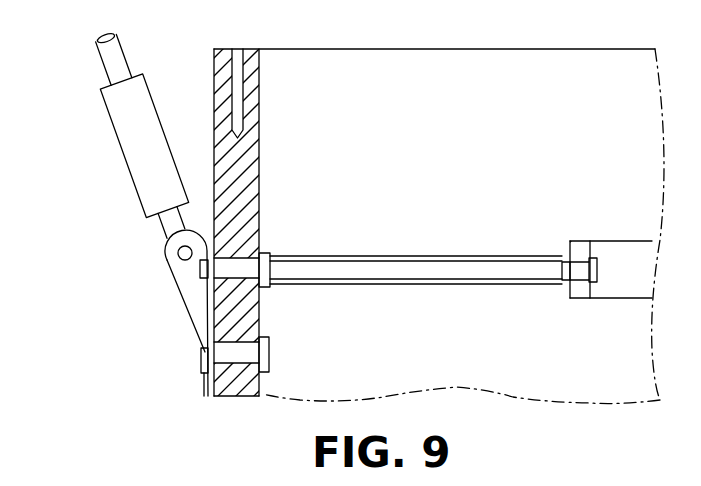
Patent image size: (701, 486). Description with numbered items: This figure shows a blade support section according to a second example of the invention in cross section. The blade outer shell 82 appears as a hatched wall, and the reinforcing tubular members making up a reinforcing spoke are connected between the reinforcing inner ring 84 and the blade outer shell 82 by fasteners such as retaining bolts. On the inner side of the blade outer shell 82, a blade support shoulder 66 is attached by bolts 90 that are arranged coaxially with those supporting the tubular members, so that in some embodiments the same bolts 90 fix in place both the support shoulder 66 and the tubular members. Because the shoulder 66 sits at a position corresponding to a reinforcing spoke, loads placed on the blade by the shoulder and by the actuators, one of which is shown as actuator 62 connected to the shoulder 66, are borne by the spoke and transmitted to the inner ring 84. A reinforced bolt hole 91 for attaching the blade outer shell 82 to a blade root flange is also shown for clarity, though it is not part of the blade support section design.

The hydraulic cylinder 62 is at (143, 153).
The blade support shoulder 66 is at (193, 305).
The blade outer shell 82 is at (253, 124).
The reinforcing inner ring 84 is at (637, 241).
The bolts 90 is at (265, 270).
The reinforced bolt holes 91 is at (234, 70).